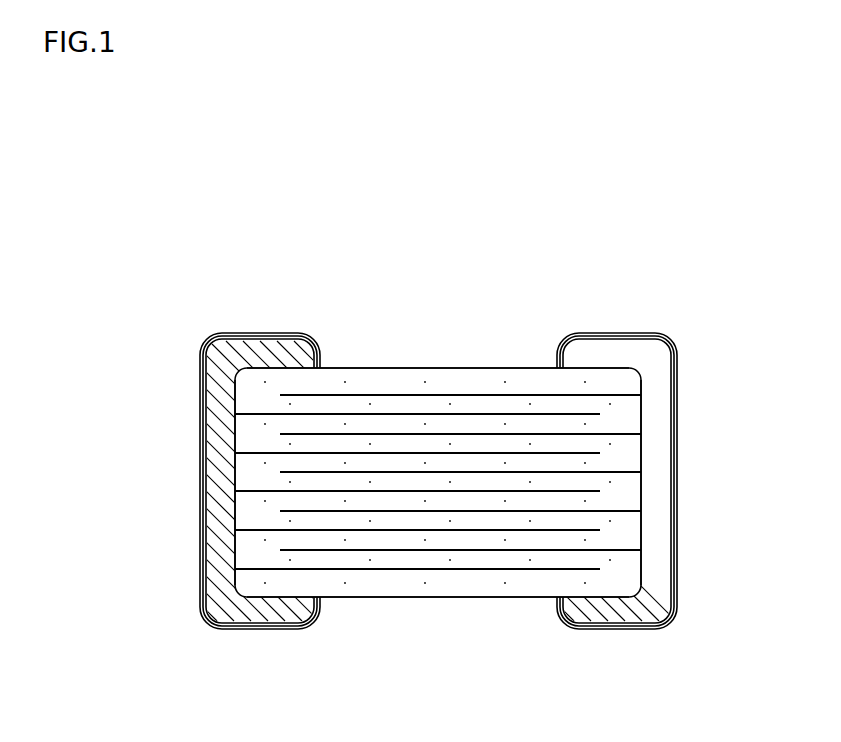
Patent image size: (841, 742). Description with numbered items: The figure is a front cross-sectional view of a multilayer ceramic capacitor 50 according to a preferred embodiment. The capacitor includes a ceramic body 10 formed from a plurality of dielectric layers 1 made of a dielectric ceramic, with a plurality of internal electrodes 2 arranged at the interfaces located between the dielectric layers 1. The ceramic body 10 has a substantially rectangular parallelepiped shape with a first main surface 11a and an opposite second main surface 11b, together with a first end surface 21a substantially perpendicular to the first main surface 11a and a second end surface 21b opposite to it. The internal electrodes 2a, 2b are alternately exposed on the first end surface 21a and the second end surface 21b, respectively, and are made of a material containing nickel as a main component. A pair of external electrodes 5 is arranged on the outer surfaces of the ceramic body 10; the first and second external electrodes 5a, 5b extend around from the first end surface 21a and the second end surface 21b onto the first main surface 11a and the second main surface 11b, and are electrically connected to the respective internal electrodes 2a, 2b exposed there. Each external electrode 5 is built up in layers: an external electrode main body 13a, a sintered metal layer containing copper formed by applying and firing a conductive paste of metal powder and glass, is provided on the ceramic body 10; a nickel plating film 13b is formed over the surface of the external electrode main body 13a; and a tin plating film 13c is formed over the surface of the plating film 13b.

The multilayer ceramic capacitor 50 is at (458, 205).
The ceramic body 10 is at (505, 362).
The dielectric layer 1 is at (475, 470).
The internal electrode 2 is at (438, 483).
The internal electrode 2a is at (370, 453).
The internal electrode 2b is at (538, 512).
The external electrode 5 is at (213, 333).
The external electrode 5a is at (338, 481).
The external electrode 5b is at (338, 481).
The first main surface 11a is at (383, 598).
The second main surface 11b is at (410, 366).
The external electrode main body 13a is at (214, 490).
The plating film 13b is at (205, 547).
The plating film 13c is at (205, 583).
The first end surface 21a is at (230, 433).
The second end surface 21b is at (648, 425).